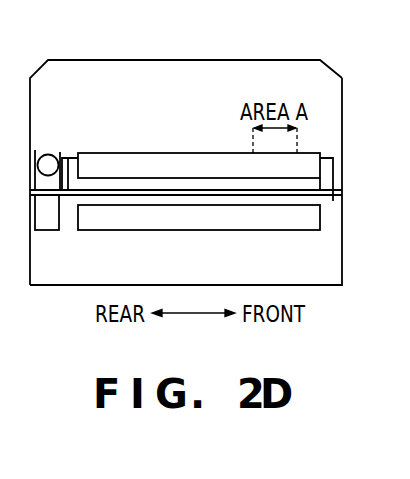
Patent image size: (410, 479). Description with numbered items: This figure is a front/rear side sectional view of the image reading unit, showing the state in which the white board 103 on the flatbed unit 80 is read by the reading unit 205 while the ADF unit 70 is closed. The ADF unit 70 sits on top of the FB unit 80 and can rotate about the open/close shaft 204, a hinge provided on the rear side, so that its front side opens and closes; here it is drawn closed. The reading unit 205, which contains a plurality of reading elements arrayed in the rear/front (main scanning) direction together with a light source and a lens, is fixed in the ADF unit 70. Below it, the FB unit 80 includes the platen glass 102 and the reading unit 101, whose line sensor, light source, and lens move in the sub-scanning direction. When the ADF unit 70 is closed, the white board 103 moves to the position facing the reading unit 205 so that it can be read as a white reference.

The ADF unit 70 is at (306, 60).
The flatbed unit 80 is at (342, 260).
The reading unit 101 is at (178, 230).
The platen glass 102 is at (65, 197).
The white board 103 is at (332, 158).
The open/close shaft 204 is at (49, 154).
The reading unit 205 is at (136, 163).